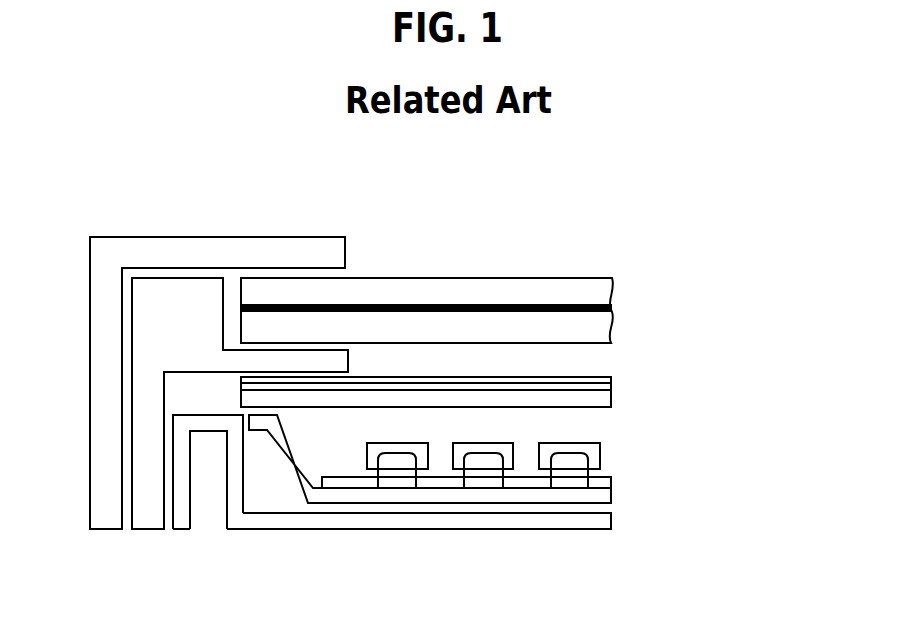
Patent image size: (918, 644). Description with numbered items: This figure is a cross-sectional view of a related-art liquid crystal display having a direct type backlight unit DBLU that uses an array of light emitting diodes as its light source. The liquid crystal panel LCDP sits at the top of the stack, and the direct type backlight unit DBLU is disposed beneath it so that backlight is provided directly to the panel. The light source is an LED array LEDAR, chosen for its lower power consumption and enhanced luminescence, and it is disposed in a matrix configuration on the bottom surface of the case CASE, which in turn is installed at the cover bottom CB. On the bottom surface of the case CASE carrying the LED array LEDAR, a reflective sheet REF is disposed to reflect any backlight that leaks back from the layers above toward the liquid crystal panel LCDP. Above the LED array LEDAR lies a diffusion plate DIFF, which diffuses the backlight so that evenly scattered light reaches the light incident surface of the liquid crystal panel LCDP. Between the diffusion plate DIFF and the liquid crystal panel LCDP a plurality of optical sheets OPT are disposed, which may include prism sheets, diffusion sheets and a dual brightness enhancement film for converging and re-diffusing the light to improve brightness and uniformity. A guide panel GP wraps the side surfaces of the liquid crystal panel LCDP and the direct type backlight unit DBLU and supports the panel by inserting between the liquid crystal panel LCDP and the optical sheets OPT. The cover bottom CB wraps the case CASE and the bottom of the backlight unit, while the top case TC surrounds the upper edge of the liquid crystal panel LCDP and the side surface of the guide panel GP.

The top case TC is at (275, 243).
The guide panel GP is at (168, 297).
The liquid crystal panel LCDP is at (620, 303).
The optical sheets OPT is at (619, 378).
The diffusion plate DIFF is at (598, 398).
The direct type backlight unit DBLU is at (742, 527).
The LED array LEDAR is at (608, 452).
The reflective sheet REF is at (598, 480).
The case CASE is at (446, 512).
The cover bottom CB is at (433, 522).